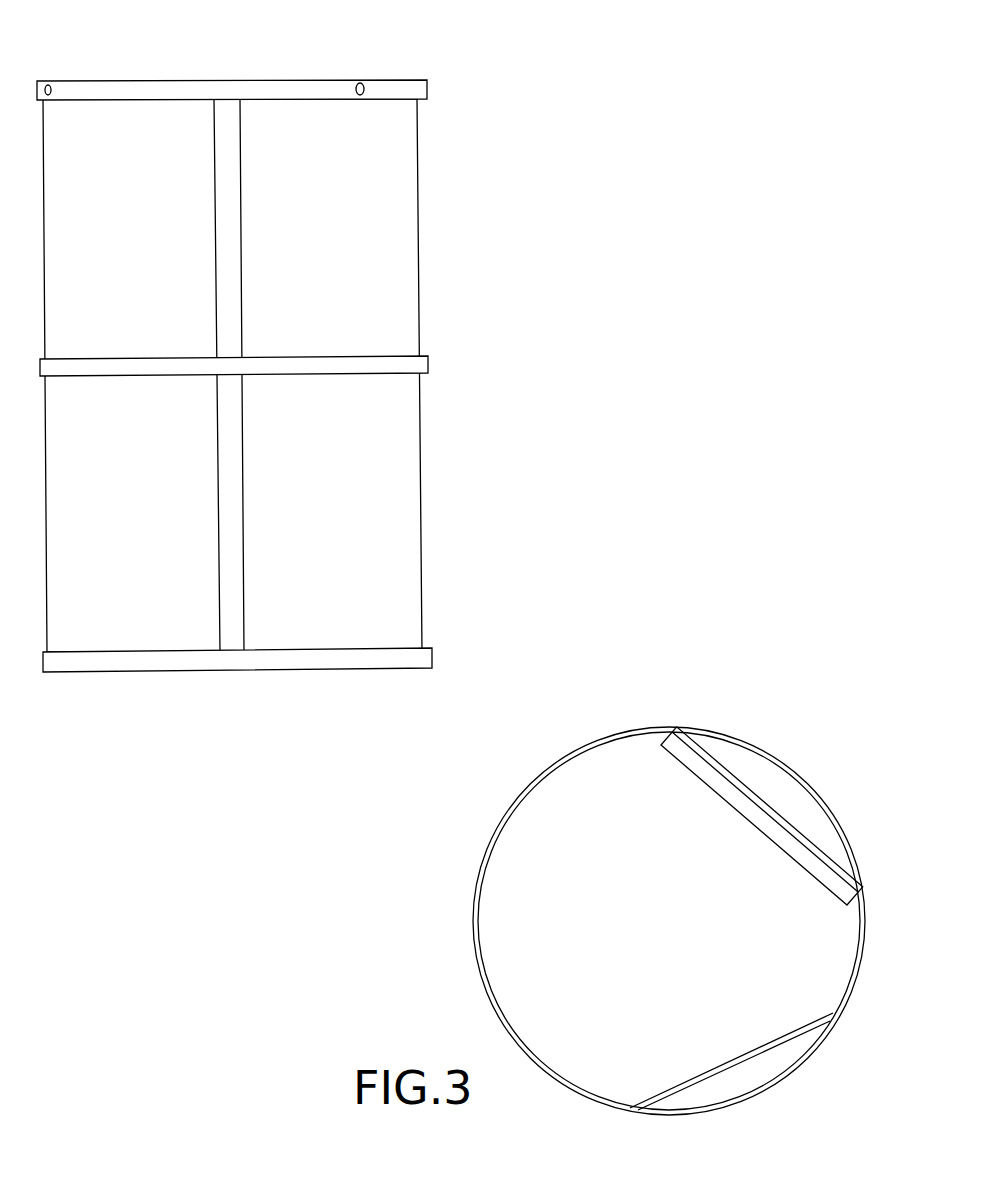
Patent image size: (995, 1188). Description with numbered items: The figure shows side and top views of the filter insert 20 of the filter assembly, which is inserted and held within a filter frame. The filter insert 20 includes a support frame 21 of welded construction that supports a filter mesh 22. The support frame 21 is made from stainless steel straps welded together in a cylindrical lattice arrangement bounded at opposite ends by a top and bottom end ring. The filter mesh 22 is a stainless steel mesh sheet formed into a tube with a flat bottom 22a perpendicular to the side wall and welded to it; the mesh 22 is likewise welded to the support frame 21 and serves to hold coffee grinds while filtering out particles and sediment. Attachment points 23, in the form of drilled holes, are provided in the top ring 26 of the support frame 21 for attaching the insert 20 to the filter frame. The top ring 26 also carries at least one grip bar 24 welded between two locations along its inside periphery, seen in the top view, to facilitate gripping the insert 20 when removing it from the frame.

In FIG. 2, the filter insert 20 is at (449, 58).
In FIG. 2, the support frame 21 is at (428, 357).
In FIG. 2, the filter mesh 22 is at (358, 226).
In FIG. 2, the attachment points 23 is at (362, 72).
In FIG. 2, the top ring 26 is at (130, 93).
In FIG. 3, the flat bottom 22a is at (687, 929).
In FIG. 3, the grip bar 24 is at (772, 803).